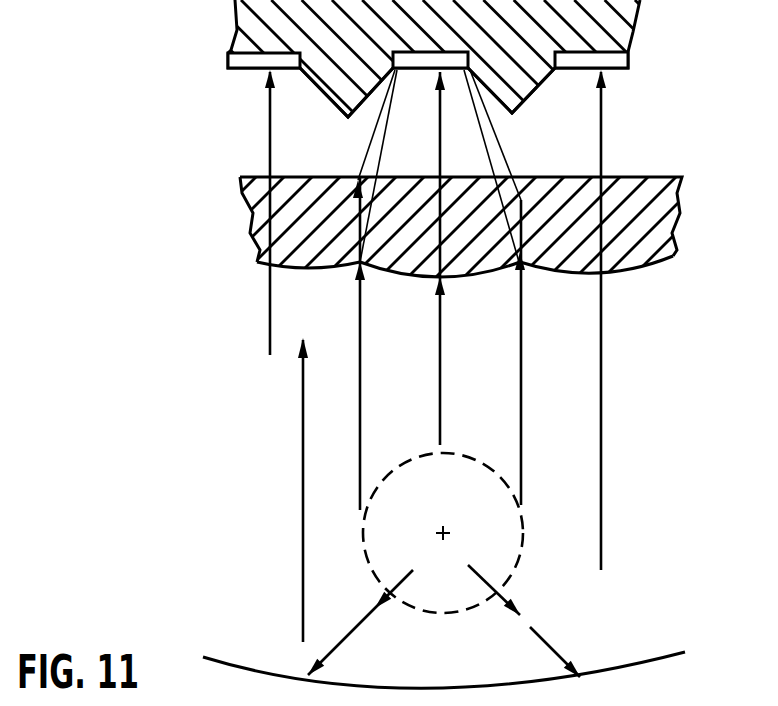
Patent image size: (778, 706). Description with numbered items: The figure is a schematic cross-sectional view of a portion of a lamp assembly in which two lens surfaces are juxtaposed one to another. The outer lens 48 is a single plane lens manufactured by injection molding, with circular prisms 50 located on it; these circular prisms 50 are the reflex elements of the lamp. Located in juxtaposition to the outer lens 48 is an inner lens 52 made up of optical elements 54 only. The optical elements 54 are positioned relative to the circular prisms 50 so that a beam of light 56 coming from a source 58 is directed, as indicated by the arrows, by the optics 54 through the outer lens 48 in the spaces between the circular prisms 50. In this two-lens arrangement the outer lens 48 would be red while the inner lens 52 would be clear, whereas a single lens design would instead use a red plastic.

The lens 48 is at (632, 33).
The circular prisms 50 is at (337, 103).
The inner lens 52 is at (700, 213).
The optical elements 54 is at (327, 269).
The beam of light 56 is at (441, 347).
The source 58 is at (524, 531).